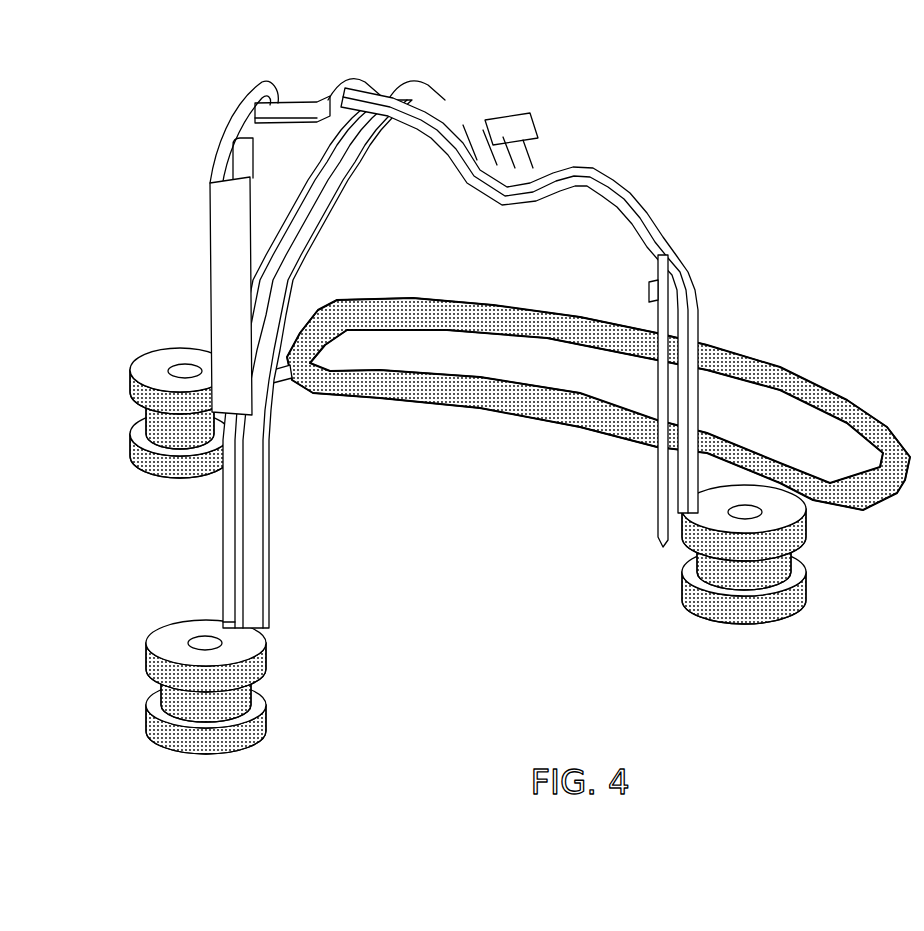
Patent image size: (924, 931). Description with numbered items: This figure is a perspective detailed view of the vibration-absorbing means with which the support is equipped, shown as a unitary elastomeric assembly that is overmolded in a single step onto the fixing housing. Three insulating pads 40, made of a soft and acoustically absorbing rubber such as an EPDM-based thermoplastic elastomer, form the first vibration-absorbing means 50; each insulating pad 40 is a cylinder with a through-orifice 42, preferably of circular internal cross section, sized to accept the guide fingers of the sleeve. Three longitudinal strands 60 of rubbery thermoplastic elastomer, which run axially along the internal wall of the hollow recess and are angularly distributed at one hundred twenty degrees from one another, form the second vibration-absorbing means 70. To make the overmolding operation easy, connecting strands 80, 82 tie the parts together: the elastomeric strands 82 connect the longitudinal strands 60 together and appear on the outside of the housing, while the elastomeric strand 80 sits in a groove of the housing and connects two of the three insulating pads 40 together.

The insulating pad 40 is at (140, 422).
The through-orifice 42 is at (185, 372).
The first vibration-absorbing means 50 is at (451, 554).
The longitudinal strand 60 is at (230, 228).
The second vibration-absorbing means 70 is at (640, 291).
The connecting strand 80 is at (853, 397).
The connecting strand 82 is at (283, 105).